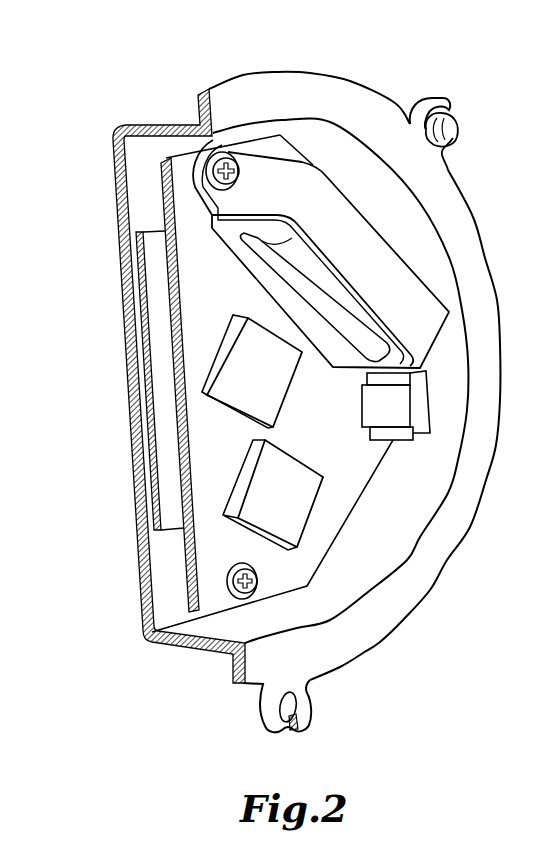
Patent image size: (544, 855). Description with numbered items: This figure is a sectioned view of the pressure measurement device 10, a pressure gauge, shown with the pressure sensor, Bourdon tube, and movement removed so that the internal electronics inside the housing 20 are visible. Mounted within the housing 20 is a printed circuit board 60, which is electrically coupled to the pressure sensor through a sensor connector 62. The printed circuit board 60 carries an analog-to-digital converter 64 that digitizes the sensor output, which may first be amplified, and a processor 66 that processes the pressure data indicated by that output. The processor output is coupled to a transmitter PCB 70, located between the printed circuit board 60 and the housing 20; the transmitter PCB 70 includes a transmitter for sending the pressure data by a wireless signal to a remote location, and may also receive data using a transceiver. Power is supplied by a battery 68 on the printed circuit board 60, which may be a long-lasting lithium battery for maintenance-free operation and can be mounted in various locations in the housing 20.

The pressure measurement device 10 is at (392, 684).
The housing 20 is at (178, 650).
The printed circuit board 60 is at (187, 592).
The sensor connector 62 is at (378, 410).
The analog-to-digital converter 64 is at (250, 512).
The processor 66 is at (236, 395).
The battery 68 is at (303, 260).
The transmitter PCB 70 is at (158, 453).